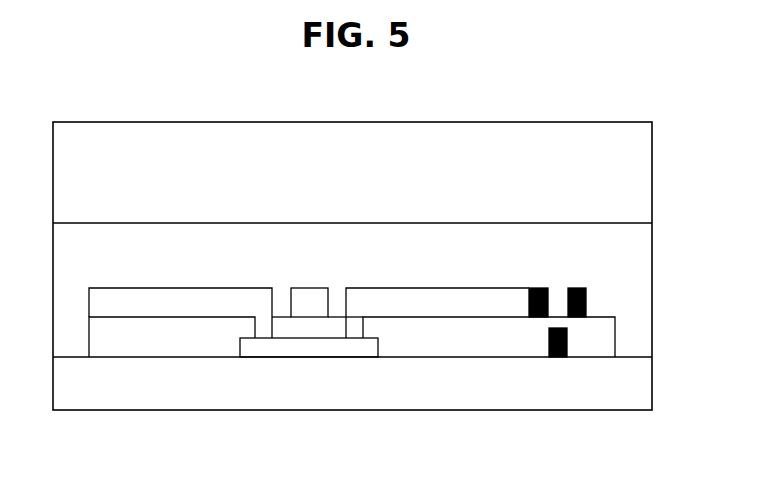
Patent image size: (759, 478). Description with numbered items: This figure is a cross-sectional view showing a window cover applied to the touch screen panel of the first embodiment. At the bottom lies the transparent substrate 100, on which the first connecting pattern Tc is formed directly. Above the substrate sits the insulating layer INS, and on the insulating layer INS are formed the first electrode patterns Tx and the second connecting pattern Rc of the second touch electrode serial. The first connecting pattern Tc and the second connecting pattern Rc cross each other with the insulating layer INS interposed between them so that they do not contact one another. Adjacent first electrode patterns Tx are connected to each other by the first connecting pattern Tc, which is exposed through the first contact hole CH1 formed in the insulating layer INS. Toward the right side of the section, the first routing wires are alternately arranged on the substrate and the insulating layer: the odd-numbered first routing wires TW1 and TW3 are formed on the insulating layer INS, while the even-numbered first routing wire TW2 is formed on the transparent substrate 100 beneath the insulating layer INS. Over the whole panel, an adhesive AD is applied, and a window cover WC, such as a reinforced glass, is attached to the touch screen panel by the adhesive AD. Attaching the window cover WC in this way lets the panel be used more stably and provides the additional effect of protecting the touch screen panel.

The window cover WC is at (643, 175).
The adhesive AD is at (643, 264).
The insulating layer INS is at (98, 333).
The first electrode pattern Tx is at (148, 292).
The first connecting pattern Tc is at (300, 348).
The second connecting pattern Rc is at (311, 292).
The first contact hole CH1 is at (362, 328).
The first routing wire TW3 is at (540, 287).
The first routing wire TW1 is at (578, 287).
The first routing wire TW2 is at (555, 358).
The transparent substrate 100 is at (371, 403).